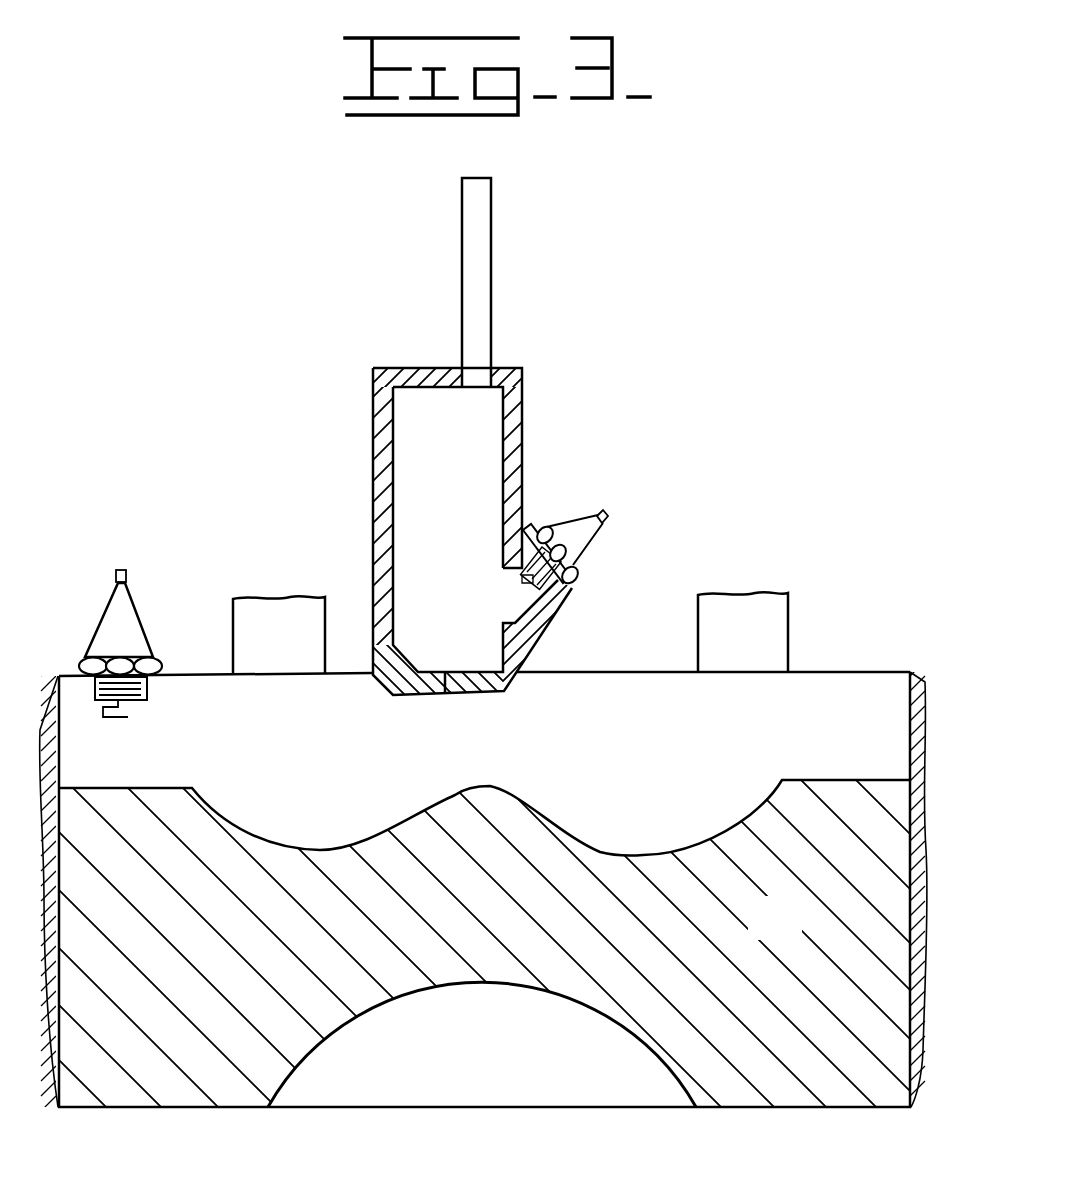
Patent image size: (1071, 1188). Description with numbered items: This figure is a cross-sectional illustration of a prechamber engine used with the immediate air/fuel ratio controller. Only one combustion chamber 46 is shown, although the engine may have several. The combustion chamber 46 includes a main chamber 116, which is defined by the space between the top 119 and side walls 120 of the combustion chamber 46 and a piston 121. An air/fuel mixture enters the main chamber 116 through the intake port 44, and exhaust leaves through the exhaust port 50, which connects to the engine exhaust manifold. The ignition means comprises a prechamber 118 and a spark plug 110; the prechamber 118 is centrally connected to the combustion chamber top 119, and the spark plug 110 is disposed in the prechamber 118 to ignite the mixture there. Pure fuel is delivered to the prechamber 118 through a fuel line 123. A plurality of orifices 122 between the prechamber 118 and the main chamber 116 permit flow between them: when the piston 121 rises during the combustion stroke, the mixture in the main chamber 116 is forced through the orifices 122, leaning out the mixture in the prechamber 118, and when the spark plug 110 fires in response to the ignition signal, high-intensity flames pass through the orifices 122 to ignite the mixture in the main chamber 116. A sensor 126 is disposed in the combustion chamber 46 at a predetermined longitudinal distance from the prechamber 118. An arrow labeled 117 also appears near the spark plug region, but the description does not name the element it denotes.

The intake port 44 is at (212, 661).
The combustion chamber 46 is at (888, 660).
The exhaust port 50 is at (796, 651).
The spark plug 110 is at (592, 544).
The main chamber 116 is at (873, 717).
The nozzle assembly 117 is at (640, 477).
The prechamber 118 is at (448, 540).
The top 119 is at (642, 673).
The side walls 120 is at (910, 743).
The piston 121 is at (790, 933).
The orifices 122 is at (396, 683).
The fuel line 123 is at (493, 265).
The sensor 126 is at (140, 610).